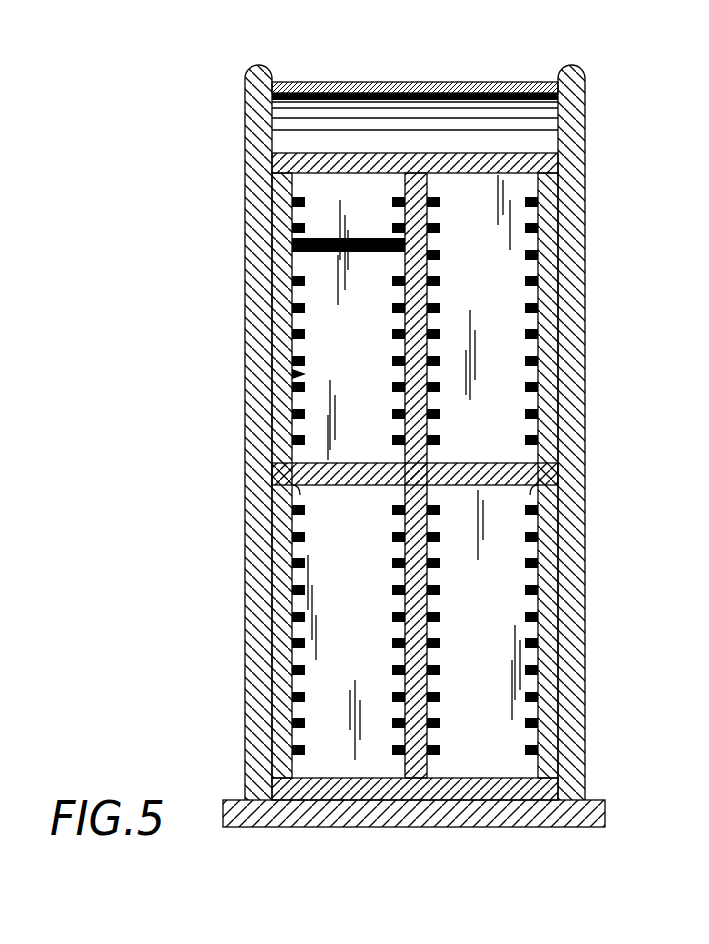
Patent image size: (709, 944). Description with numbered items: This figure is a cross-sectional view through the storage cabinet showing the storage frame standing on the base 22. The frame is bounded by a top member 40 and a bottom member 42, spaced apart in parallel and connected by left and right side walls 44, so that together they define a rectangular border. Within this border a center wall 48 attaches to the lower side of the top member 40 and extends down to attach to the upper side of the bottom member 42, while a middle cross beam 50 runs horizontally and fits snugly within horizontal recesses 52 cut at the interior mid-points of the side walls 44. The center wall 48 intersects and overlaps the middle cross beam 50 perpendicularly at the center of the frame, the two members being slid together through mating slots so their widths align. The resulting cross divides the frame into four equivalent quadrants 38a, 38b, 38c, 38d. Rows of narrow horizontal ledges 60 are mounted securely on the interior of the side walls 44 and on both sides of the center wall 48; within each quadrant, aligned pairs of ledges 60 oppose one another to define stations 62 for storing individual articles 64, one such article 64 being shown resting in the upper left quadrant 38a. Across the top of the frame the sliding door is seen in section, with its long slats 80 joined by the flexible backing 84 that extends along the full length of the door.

The base 22 is at (355, 828).
The quadrant 38a is at (350, 420).
The quadrant 38b is at (510, 378).
The quadrant 38c is at (318, 690).
The quadrant 38d is at (500, 608).
The top member 40 is at (560, 162).
The bottom member 42 is at (530, 780).
The side wall 44 is at (290, 228).
The center wall 48 is at (418, 264).
The middle cross beam 50 is at (510, 463).
The horizontal recess 52 is at (295, 497).
The horizontal ledge 60 is at (300, 398).
The station 62 is at (292, 374).
The article 64 is at (298, 246).
The long slat 80 is at (448, 83).
The flexible backing 84 is at (517, 104).